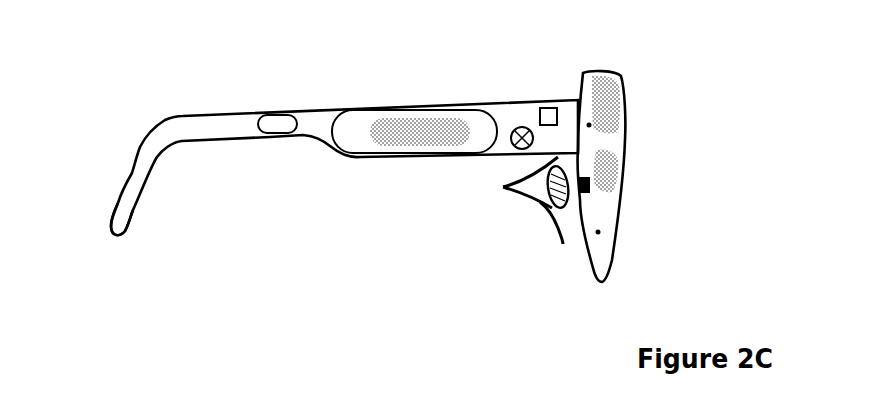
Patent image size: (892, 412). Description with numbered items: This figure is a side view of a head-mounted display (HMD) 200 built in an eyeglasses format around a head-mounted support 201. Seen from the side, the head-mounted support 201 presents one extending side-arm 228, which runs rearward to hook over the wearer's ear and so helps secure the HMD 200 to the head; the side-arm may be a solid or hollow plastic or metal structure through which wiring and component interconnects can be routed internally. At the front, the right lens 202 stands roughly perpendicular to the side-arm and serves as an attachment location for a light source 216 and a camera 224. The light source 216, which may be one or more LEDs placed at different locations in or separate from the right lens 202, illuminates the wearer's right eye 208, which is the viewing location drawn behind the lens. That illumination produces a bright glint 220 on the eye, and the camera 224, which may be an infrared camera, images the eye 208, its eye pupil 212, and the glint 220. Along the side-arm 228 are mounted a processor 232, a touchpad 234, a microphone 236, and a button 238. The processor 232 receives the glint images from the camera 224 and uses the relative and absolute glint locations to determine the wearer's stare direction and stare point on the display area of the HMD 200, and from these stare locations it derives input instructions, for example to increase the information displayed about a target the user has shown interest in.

The head-mounted display 200 is at (365, 214).
The head-mounted support 201 is at (179, 112).
The right lens 202 is at (598, 285).
The right eye 208 is at (523, 194).
The eye pupil 212 is at (563, 243).
The light source 216 is at (601, 231).
The glint 220 is at (550, 208).
The camera 224 is at (592, 186).
The extending side-arm 228 is at (133, 229).
The processor 232 is at (257, 120).
The touchpad 234 is at (320, 110).
The microphone 236 is at (520, 127).
The button 238 is at (550, 108).